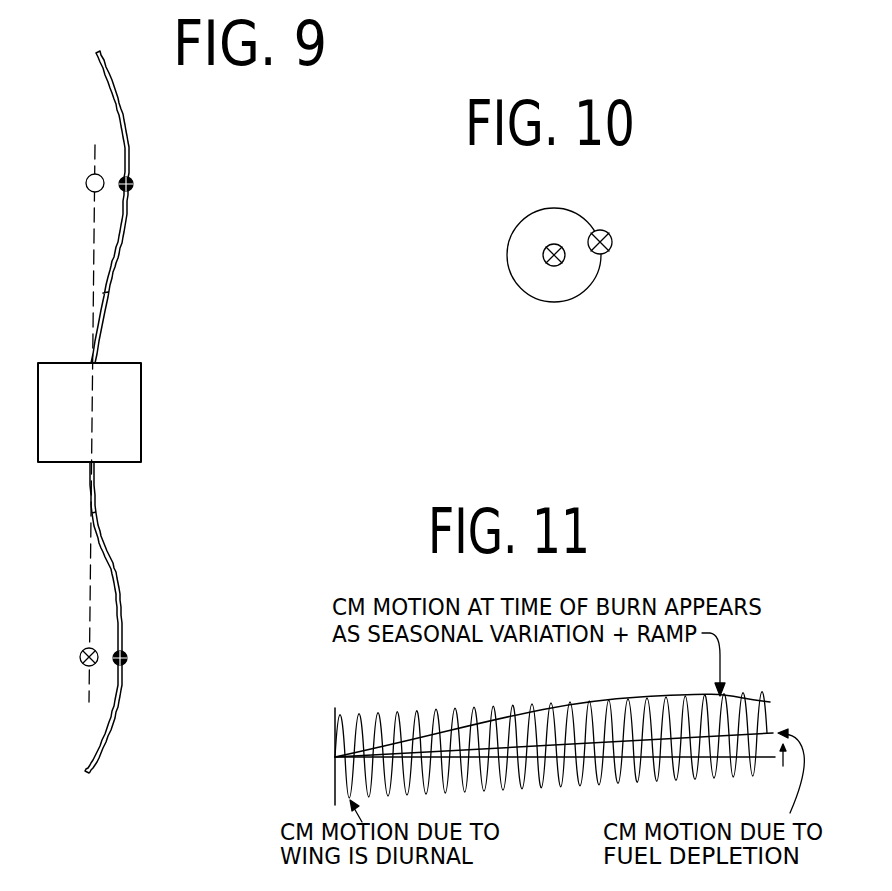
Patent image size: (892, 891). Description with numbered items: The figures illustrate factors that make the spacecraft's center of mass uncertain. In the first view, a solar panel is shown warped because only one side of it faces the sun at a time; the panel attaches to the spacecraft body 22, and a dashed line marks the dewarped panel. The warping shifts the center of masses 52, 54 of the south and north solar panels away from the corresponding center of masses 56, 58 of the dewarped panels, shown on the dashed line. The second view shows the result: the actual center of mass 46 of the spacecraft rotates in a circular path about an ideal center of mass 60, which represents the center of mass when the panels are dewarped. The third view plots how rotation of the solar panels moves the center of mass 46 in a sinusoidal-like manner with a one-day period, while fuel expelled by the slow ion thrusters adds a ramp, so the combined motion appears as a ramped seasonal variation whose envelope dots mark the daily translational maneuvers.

In FIG. 9, the spacecraft body 22 is at (128, 393).
In FIG. 9, the center of mass of the dewarped north solar panel 58 is at (86, 177).
In FIG. 9, the center of mass of the north solar panel 54 is at (133, 187).
In FIG. 9, the center of mass of the dewarped south solar panel 56 is at (82, 650).
In FIG. 9, the center of mass of the south solar panel 52 is at (127, 663).
In FIG. 10, the ideal center of mass 60 is at (545, 247).
In FIG. 10, the center of mass 46 is at (606, 231).